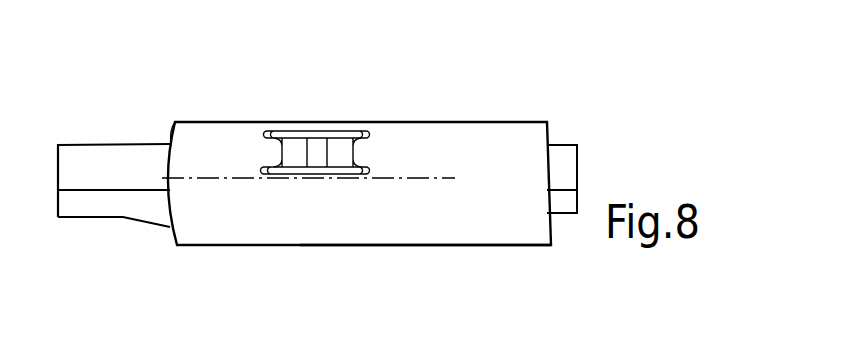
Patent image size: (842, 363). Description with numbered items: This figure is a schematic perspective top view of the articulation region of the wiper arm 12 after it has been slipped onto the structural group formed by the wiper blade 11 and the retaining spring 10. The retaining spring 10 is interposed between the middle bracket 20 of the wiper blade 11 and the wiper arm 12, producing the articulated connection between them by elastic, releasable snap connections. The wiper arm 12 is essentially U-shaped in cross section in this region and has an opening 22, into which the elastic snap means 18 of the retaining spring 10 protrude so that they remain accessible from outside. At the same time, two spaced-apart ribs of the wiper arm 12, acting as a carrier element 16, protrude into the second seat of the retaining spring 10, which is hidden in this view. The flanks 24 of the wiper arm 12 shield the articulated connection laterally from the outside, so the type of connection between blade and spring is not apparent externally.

The retaining spring 10 is at (342, 143).
The wiper blade 11 is at (100, 150).
The wiper arm 12 is at (492, 145).
The carrier element 16 is at (268, 150).
The elastic snap means 18 is at (295, 143).
The middle bracket 20 is at (137, 167).
The opening 22 is at (280, 133).
The flanks 24 is at (455, 202).